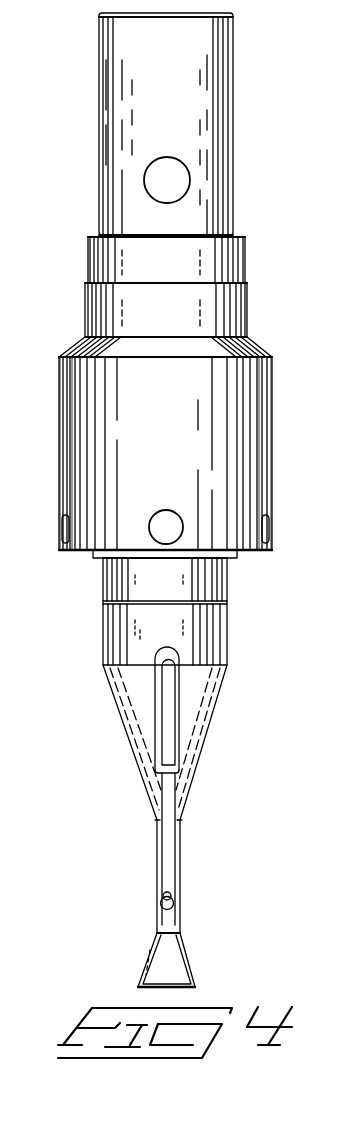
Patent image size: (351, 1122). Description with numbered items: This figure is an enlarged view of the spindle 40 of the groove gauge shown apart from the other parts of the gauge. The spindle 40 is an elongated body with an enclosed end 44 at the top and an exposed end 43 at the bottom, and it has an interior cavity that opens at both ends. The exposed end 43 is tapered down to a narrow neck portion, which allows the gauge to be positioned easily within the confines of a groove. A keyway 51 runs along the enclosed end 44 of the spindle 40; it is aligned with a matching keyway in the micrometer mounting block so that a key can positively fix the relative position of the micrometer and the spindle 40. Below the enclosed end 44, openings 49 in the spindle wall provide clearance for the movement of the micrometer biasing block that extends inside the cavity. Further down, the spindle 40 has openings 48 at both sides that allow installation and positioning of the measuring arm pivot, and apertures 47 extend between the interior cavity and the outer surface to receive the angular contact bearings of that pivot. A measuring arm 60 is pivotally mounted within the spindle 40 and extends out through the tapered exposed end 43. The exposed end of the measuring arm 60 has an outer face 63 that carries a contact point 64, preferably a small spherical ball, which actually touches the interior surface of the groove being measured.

The spindle 40 is at (282, 397).
The exposed end 43 is at (185, 863).
The enclosed end 44 is at (228, 107).
The apertures 47 is at (270, 523).
The openings 48 is at (165, 511).
The openings 49 is at (168, 157).
The keyway 51 is at (107, 100).
The measuring arm 60 is at (167, 800).
The outer face 63 is at (168, 852).
The contact point 64 is at (161, 900).